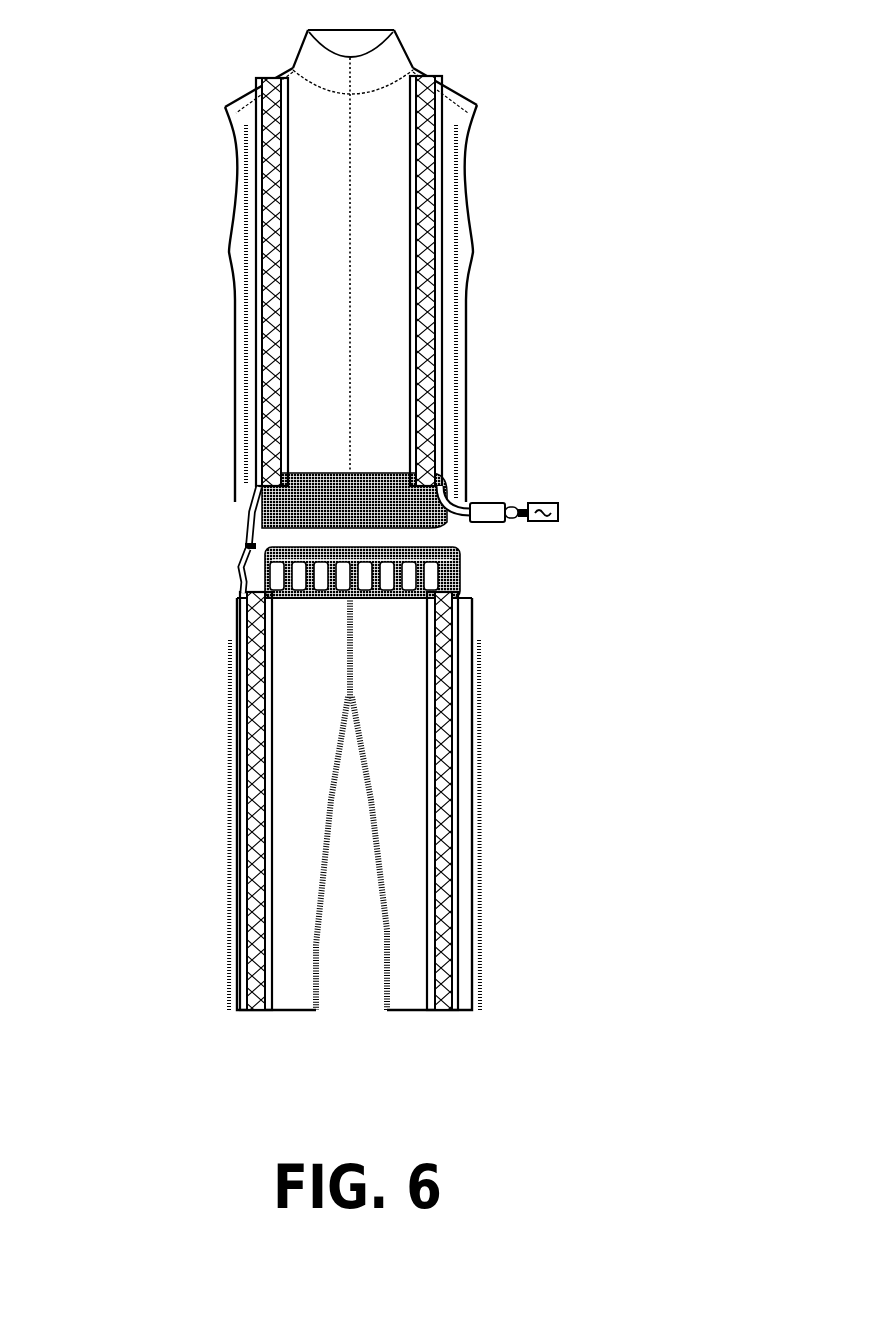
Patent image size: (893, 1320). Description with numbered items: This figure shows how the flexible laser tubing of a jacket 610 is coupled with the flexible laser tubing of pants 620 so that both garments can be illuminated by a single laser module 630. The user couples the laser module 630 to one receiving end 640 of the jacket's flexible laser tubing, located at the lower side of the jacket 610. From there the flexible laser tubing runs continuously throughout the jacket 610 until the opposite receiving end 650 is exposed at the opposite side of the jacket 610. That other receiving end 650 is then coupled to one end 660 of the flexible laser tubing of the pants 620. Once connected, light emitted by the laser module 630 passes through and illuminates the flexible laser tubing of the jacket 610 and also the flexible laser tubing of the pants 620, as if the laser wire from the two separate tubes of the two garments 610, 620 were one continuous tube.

The jacket 610 is at (235, 262).
The pants 620 is at (238, 877).
The laser module 630 is at (490, 502).
The receiving end 640 is at (453, 488).
The opposite receiving end 650 is at (247, 528).
The end of pants flexible laser tubing 660 is at (240, 560).